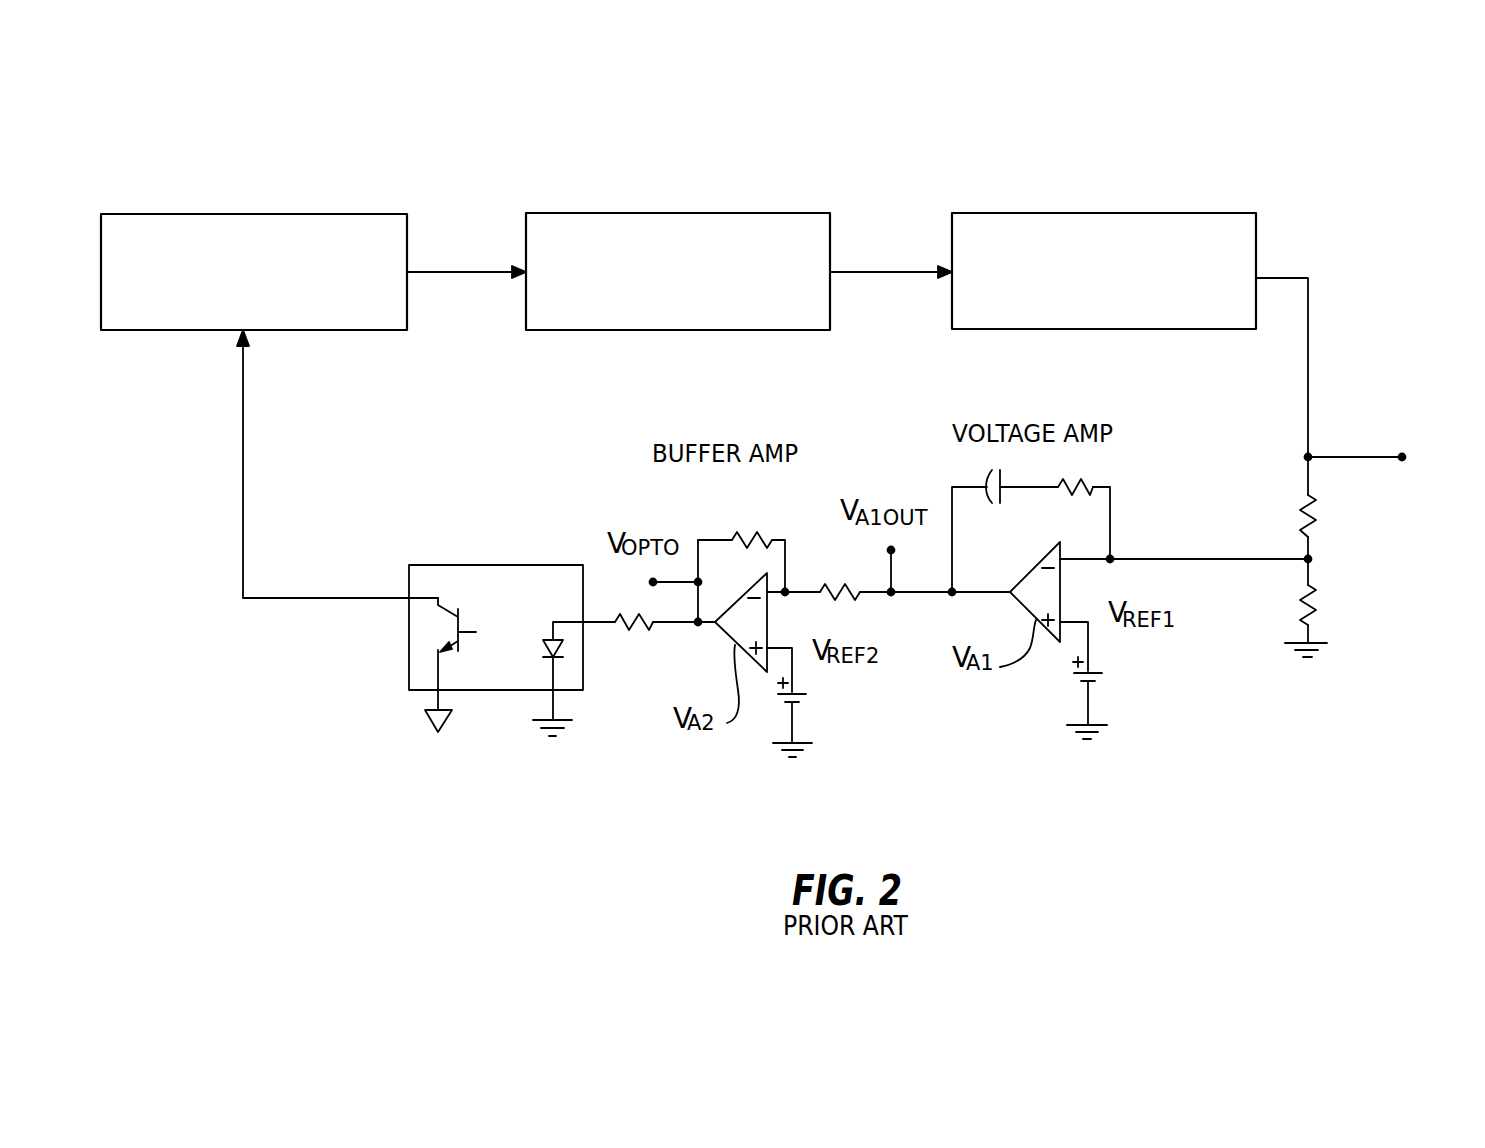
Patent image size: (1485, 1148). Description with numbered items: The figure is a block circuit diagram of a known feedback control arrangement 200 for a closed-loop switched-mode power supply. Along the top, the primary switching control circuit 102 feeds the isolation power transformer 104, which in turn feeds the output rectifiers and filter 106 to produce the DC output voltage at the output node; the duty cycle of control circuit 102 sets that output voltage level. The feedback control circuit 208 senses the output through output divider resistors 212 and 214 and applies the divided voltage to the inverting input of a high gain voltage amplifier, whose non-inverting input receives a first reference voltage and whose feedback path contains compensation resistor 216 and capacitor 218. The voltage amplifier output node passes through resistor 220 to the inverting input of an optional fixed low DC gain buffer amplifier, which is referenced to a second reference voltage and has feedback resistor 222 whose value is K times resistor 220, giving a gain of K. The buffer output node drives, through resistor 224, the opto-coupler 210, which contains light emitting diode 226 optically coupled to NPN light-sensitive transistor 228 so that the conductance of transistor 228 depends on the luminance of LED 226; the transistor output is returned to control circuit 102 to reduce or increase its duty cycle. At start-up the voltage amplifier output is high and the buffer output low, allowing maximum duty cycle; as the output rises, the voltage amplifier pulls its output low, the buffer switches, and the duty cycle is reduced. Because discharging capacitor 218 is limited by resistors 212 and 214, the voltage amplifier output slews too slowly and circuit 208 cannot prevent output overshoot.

The feedback control and opto-coupler embodiment 200 is at (1302, 127).
The primary switching control circuit 102 is at (273, 213).
The isolation power transformer 104 is at (716, 213).
The output rectifiers and filter 106 is at (1094, 213).
The feedback control circuit 208 is at (1180, 783).
The opto-coupler 210 is at (409, 653).
The output divider resistor 212 is at (1314, 513).
The output divider resistor 214 is at (1314, 616).
The resistor 216 is at (1088, 488).
The capacitor 218 is at (1000, 503).
The resistor 220 is at (858, 592).
The resistor 222 is at (762, 538).
The resistor 224 is at (626, 625).
The light emitting diode 226 is at (548, 640).
The NPN light-sensitive transistor 228 is at (462, 636).